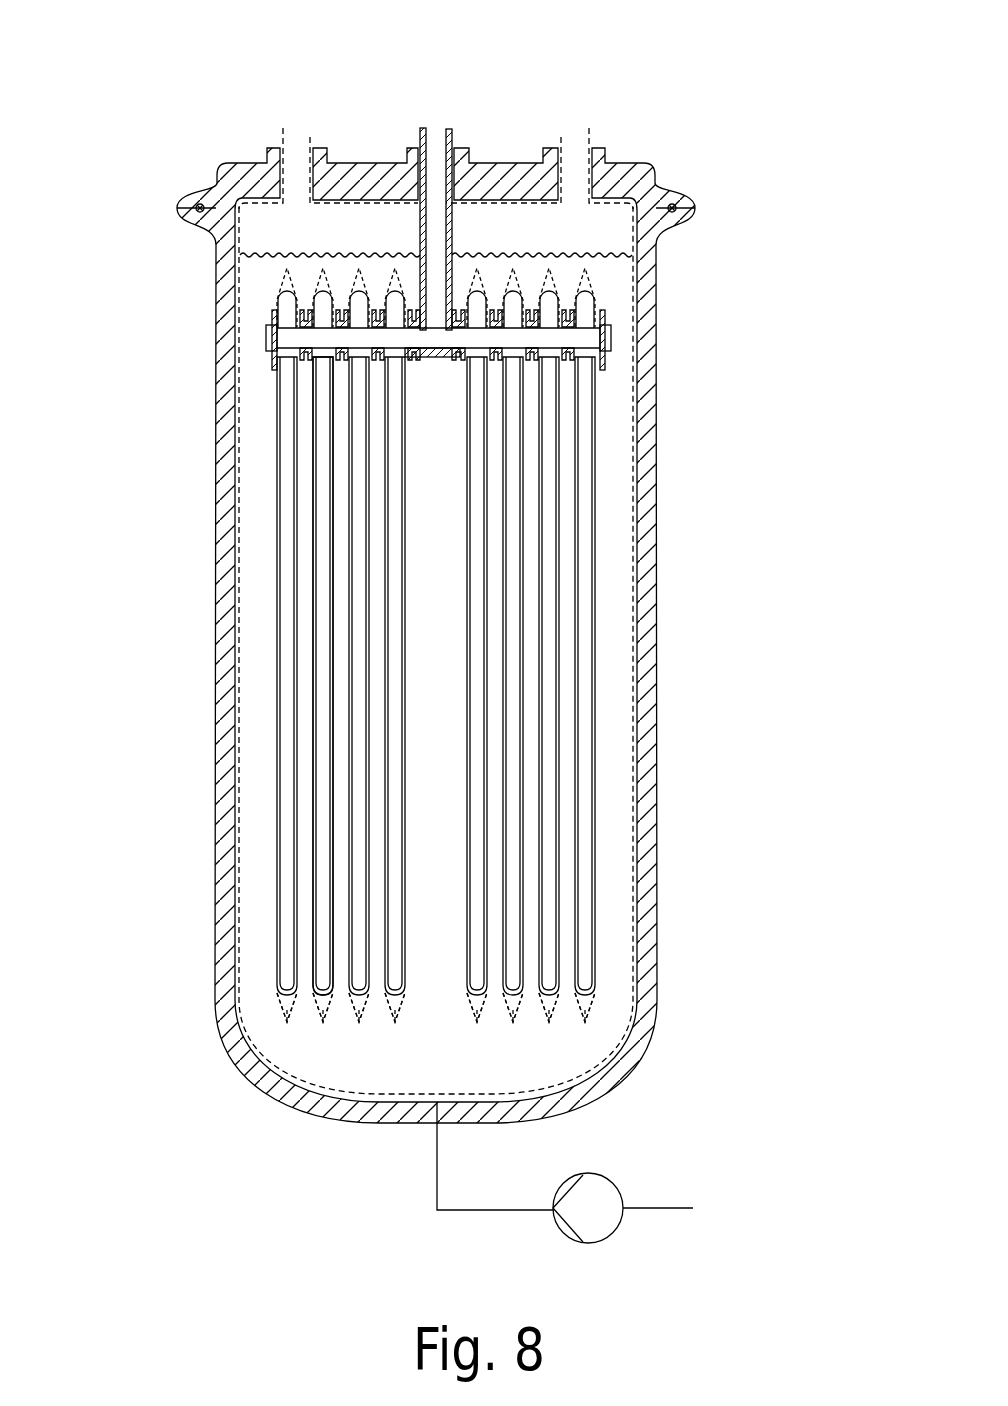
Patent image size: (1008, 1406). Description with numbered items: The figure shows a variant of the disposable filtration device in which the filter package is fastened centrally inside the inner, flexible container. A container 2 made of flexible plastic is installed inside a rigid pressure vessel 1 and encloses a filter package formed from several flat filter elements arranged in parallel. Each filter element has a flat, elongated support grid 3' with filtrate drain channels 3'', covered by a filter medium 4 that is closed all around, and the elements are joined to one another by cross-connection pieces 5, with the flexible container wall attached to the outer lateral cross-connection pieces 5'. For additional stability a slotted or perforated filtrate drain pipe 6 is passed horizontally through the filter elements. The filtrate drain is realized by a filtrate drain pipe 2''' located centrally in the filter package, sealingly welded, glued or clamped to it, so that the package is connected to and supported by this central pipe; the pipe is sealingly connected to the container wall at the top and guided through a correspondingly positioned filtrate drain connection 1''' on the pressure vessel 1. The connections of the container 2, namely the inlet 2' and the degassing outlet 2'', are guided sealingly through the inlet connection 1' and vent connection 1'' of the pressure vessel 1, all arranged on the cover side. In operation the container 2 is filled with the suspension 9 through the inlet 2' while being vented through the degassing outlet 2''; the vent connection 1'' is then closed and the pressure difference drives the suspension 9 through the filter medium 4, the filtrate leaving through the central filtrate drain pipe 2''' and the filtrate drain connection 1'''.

The pressure vessel 1 is at (370, 612).
The inlet connection 1' is at (281, 142).
The vent connection 1'' is at (607, 143).
The filtrate drain connection 1''' is at (512, 178).
The container 2 is at (771, 156).
The inlet 2' is at (323, 101).
The degassing outlet 2'' is at (561, 101).
The filtrate drain pipe 2''' is at (448, 165).
The support grid 3' is at (197, 645).
The filtrate drain channels 3'' is at (197, 676).
The filter medium 4 is at (278, 1002).
The cross-connection pieces 5 is at (518, 398).
The outer cross-connection piece 5' is at (443, 357).
The filtrate drain pipe 6 is at (392, 335).
The suspension 9 is at (463, 1063).